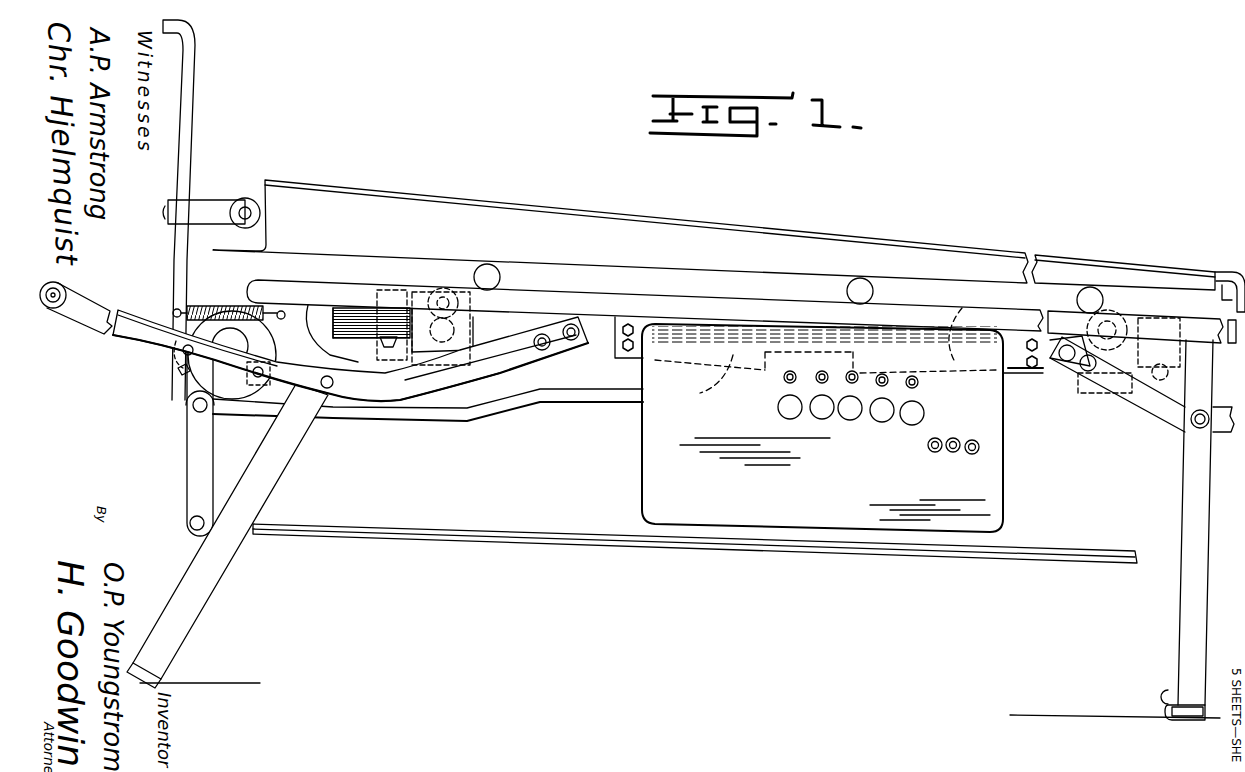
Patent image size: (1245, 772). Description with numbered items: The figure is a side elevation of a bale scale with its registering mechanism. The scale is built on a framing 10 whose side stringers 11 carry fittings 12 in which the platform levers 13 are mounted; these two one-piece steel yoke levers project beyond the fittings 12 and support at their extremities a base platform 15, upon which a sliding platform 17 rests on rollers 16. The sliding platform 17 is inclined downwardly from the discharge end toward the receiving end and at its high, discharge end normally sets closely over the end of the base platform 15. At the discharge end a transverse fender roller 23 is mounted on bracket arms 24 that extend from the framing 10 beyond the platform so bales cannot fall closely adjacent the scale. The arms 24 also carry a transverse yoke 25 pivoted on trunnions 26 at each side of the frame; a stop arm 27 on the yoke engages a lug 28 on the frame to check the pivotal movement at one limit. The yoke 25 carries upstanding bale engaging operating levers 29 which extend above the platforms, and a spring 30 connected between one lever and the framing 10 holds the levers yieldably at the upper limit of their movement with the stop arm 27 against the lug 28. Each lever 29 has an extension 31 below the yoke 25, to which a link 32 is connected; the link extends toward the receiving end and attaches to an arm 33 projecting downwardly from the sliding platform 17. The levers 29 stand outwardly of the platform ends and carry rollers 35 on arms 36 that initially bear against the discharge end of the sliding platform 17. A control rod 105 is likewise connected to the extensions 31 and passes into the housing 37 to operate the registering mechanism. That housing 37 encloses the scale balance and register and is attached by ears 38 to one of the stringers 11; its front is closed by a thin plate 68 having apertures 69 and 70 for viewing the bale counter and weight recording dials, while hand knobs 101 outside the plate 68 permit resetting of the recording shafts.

The framing 10 is at (292, 462).
The side stringers 11 is at (612, 327).
The fittings 12 is at (455, 300).
The platform levers 13 is at (826, 350).
The base platform 15 is at (735, 307).
The rollers 16 is at (500, 277).
The sliding platform 17 is at (682, 240).
The fender roller 23 is at (76, 323).
The bracket arms 24 is at (142, 337).
The transverse yoke 25 is at (183, 372).
The trunnions 26 is at (185, 353).
The stop arm 27 is at (258, 340).
The lug 28 is at (257, 386).
The operating levers 29 is at (187, 95).
The spring 30 is at (203, 307).
The extension 31 is at (187, 473).
The link 32 is at (396, 524).
The arm 33 is at (1238, 293).
The rollers 35 is at (245, 200).
The arms 36 is at (203, 207).
The housing 37 is at (738, 460).
The ears 38 is at (622, 355).
The plate 68 is at (1000, 483).
The apertures 69 is at (970, 440).
The apertures 70 is at (919, 384).
The hand knobs 101 is at (830, 418).
The control rod 105 is at (530, 402).